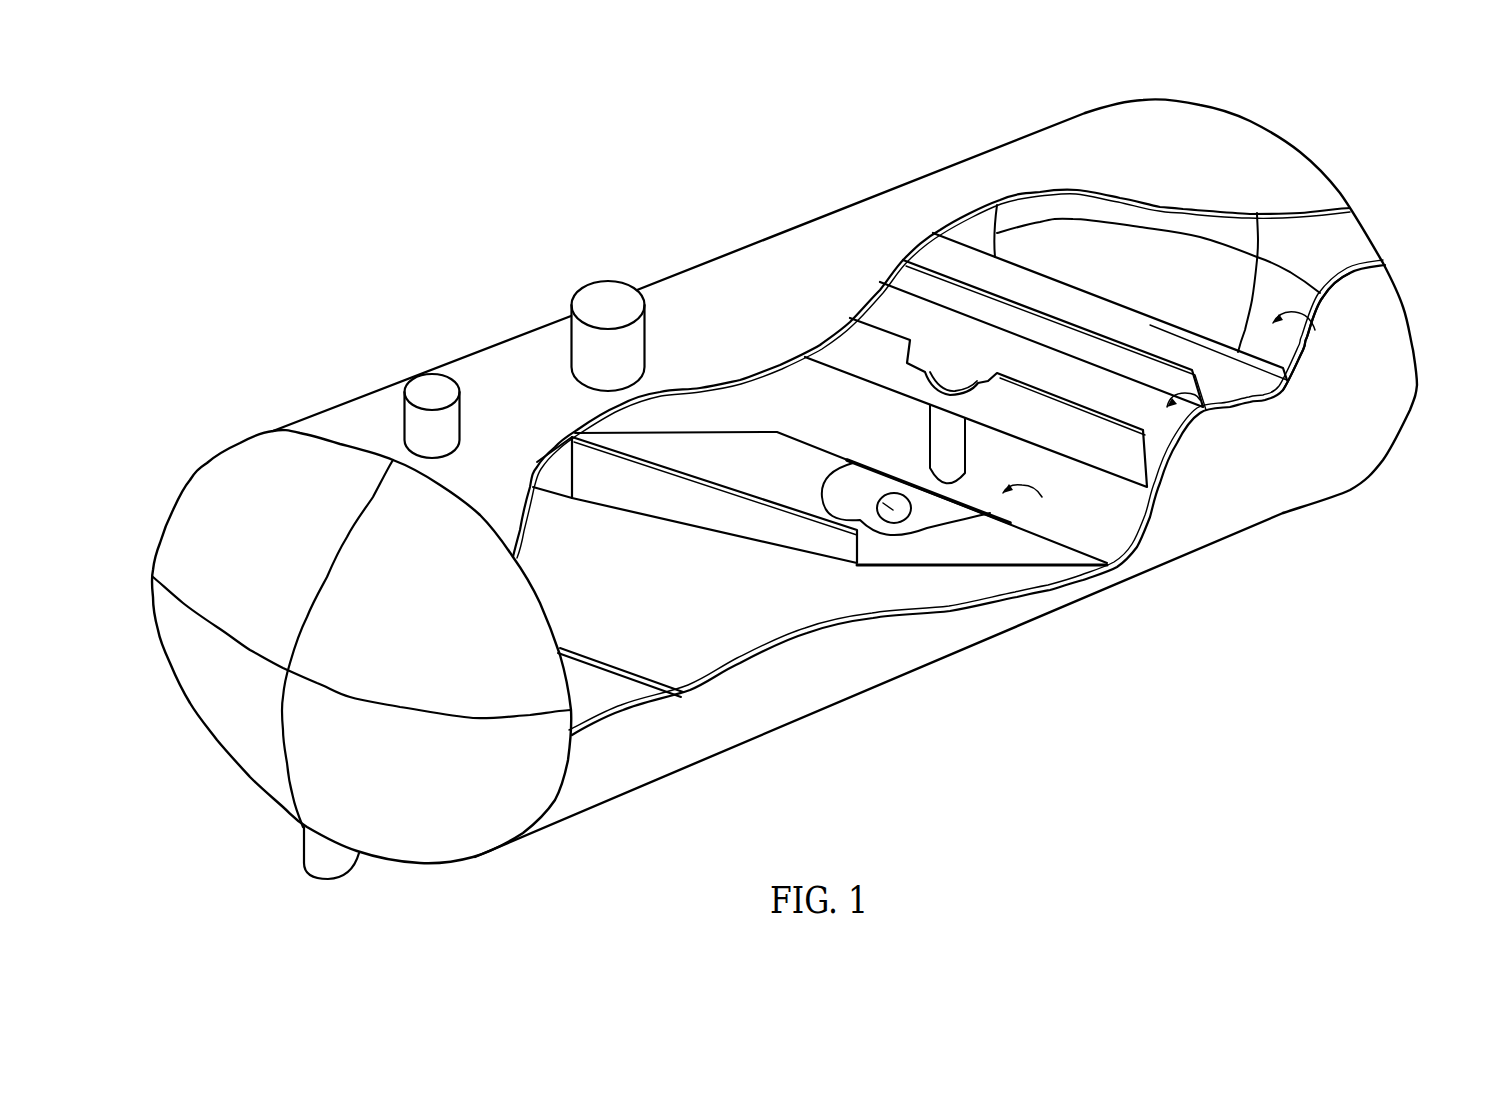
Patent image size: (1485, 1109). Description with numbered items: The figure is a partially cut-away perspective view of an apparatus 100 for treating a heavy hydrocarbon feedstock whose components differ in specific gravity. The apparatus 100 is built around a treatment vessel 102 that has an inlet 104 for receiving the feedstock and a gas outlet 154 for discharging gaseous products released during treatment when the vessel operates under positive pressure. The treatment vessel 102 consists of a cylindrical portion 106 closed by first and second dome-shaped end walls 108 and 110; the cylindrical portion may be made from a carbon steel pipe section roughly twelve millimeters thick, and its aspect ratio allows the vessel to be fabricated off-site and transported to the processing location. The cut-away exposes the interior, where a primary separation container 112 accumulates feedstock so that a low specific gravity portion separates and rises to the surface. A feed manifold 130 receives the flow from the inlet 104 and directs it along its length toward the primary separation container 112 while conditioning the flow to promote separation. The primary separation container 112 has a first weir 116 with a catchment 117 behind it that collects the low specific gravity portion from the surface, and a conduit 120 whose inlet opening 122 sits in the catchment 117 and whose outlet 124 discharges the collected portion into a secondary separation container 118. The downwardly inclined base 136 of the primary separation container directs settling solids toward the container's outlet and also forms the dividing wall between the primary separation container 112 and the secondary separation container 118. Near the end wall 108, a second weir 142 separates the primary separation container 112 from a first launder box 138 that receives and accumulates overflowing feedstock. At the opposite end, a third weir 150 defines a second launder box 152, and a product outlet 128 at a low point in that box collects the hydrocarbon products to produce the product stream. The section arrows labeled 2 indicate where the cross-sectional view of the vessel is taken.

The apparatus 100 is at (385, 210).
The treatment vessel 102 is at (817, 213).
The inlet 104 is at (608, 300).
The cylindrical portion 106 is at (936, 650).
The first dome-shaped end wall 108 is at (1333, 218).
The second dome-shaped end wall 110 is at (190, 478).
The primary separation container 112 is at (963, 440).
The first weir 116 is at (1147, 417).
The catchment 117 is at (1197, 393).
The secondary separation container 118 is at (767, 620).
The conduit 120 is at (932, 452).
The inlet opening 122 is at (953, 380).
The outlet 124 is at (857, 487).
The product outlet 128 is at (344, 886).
The feed manifold 130 is at (677, 510).
The downwardly inclined base 136 is at (953, 555).
The first launder box 138 is at (1313, 333).
The second weir 142 is at (1297, 383).
The third weir 150 is at (640, 680).
The second launder box 152 is at (583, 707).
The gas outlet 154 is at (432, 385).
The section line 2- 2 is at (206, 697).